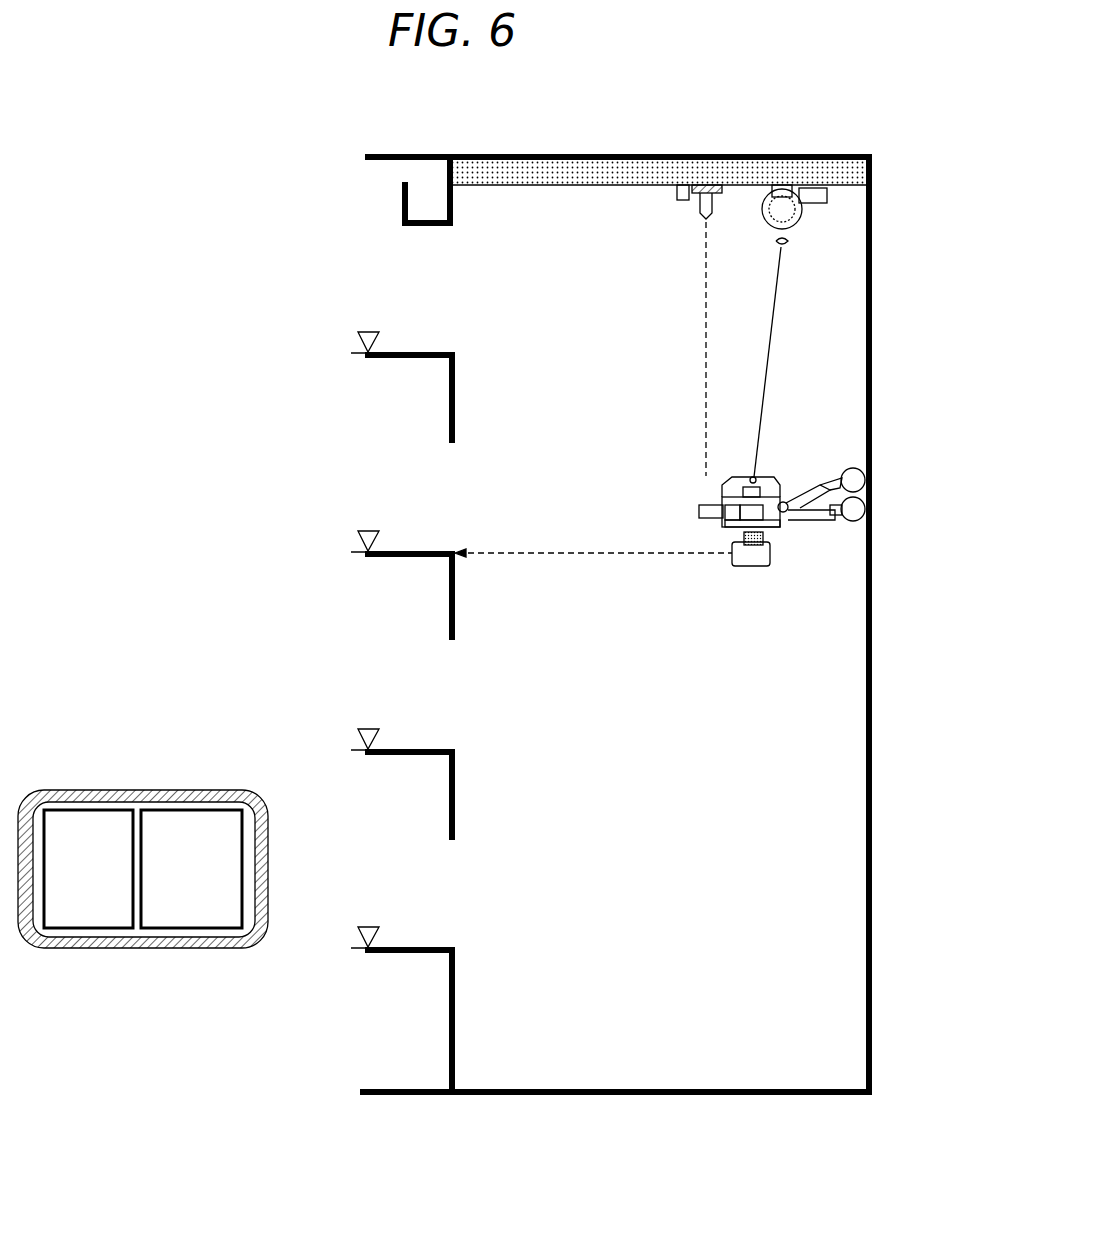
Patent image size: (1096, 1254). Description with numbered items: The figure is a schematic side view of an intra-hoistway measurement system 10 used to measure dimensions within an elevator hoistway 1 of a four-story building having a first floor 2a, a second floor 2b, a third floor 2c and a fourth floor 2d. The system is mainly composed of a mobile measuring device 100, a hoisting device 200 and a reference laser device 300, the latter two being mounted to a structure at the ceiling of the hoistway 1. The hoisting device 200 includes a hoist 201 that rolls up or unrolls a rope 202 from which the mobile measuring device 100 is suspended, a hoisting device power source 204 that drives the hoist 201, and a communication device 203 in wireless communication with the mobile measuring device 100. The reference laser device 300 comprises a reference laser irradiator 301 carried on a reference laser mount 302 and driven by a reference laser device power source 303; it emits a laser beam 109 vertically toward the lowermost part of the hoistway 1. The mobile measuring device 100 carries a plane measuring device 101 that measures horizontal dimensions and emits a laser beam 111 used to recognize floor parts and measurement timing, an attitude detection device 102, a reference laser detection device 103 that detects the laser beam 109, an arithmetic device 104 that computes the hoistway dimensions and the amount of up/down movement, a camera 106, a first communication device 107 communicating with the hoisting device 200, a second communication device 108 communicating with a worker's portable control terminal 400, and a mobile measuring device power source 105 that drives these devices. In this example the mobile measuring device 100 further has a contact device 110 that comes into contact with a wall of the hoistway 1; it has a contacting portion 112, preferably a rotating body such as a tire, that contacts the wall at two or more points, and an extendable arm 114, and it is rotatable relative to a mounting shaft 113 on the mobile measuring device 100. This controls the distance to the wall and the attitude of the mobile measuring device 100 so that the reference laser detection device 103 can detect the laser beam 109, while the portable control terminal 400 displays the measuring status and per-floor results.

The elevator hoistway 1 is at (869, 985).
The intra-hoistway measurement system 10 is at (575, 415).
The first floor 2a is at (355, 937).
The second floor 2b is at (355, 739).
The third floor 2c is at (355, 541).
The fourth floor 2d is at (355, 342).
The mobile measuring device 100 is at (775, 528).
The plane measuring device 101 is at (735, 562).
The attitude detection device 102 is at (755, 478).
The reference laser detection device 103 is at (699, 510).
The arithmetic device 104 is at (765, 513).
The mobile measuring device power source 105 is at (776, 526).
The camera 106 is at (776, 552).
The first communication device 107 is at (735, 502).
The second communication device 108 is at (732, 518).
The laser beam 109 is at (704, 322).
The contact device 110 is at (805, 495).
The laser beam 111 is at (512, 560).
The contacting portion 112 is at (870, 472).
The mounting shaft 113 is at (786, 503).
The extendable arm 114 is at (860, 472).
The hoisting device 200 is at (824, 291).
The hoist 201 is at (800, 222).
The rope 202 is at (768, 343).
The communication device 203 is at (785, 188).
The hoisting device power source 204 is at (827, 196).
The reference laser device 300 is at (650, 189).
The reference laser irradiator 301 is at (700, 212).
The reference laser mount 302 is at (703, 185).
The reference laser device power source 303 is at (680, 185).
The portable control terminal 400 is at (146, 950).